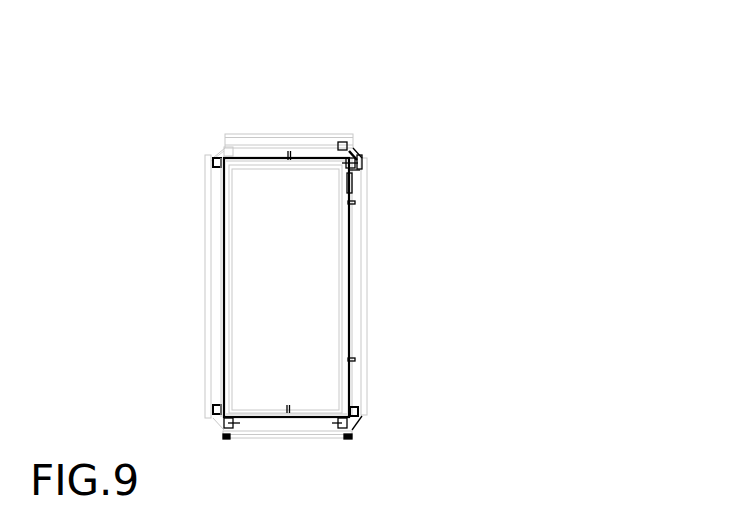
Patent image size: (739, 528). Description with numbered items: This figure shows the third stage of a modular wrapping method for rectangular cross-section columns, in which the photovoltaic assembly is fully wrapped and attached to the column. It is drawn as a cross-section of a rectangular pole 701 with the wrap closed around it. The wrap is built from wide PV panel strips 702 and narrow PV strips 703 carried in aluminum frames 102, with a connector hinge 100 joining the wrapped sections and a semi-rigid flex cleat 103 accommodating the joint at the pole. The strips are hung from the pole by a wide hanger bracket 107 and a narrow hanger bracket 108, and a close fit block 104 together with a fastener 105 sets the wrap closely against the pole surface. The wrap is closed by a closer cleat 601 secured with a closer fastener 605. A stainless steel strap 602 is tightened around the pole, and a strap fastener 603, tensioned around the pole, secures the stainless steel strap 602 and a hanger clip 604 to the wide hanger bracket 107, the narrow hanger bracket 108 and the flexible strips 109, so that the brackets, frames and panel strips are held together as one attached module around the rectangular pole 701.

The connector hinge 100 is at (198, 140).
The aluminum frames 102 is at (368, 158).
The semi-rigid flex cleat 103 is at (356, 422).
The close fit block 104 is at (230, 410).
The fastener 105 is at (237, 425).
The wide hanger bracket 107 is at (350, 300).
The narrow hanger bracket 108 is at (262, 156).
The flexible strips 109 is at (347, 350).
The closer cleat 601 is at (356, 149).
The stainless steel strap 602 is at (305, 158).
The strap fastener 603 is at (368, 180).
The hanger clip 604 is at (227, 205).
The closer fastener 605 is at (360, 153).
The rectangular pole 701 is at (345, 260).
The wide PV panel strips 702 is at (367, 382).
The narrow PV strips 703 is at (243, 135).